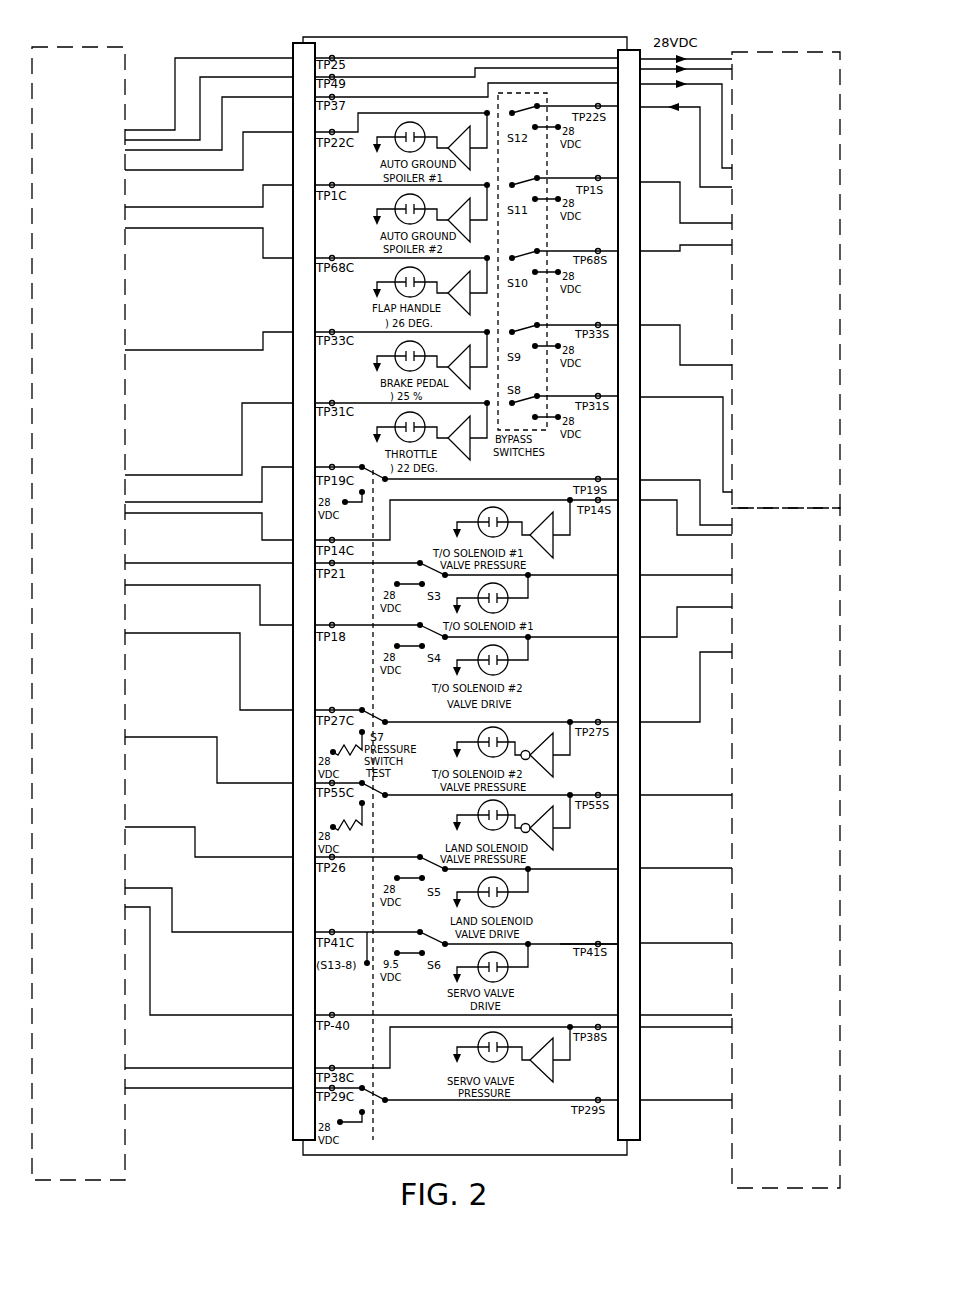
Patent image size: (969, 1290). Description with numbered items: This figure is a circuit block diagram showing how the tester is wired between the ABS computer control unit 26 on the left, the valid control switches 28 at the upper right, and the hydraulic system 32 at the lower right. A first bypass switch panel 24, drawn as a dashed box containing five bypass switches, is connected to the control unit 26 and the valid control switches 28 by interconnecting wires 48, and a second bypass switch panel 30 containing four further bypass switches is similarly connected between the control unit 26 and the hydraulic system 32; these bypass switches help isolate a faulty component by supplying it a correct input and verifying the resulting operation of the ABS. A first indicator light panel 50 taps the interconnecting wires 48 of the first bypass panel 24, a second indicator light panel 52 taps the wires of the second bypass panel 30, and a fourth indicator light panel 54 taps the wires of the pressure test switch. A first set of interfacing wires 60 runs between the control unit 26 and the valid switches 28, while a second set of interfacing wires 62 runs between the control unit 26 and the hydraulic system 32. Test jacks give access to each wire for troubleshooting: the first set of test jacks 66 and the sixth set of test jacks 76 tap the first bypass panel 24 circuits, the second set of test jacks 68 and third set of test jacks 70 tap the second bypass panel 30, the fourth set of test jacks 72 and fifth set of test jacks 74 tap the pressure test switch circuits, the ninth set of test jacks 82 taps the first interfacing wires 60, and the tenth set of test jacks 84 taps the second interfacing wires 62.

The first bypass switch panel 24 is at (548, 308).
The computer control unit 26 is at (88, 222).
The valid control switches 28 is at (795, 142).
The second bypass switch panel 30 is at (372, 633).
The hydraulic system 32 is at (798, 638).
The interconnecting wires 48 is at (358, 331).
The first indicator light panel 50 is at (396, 145).
The second indicator light panel 52 is at (507, 668).
The fourth indicator light panel 54 is at (512, 1042).
The first set of interfacing wires 60 is at (433, 57).
The second set of interfacing wires 62 is at (528, 500).
The first set of test jacks 66 is at (600, 176).
The second set of test jacks 68 is at (600, 941).
The third set of test jacks 70 is at (348, 600).
The fourth set of test jacks 72 is at (349, 445).
The fifth set of test jacks 74 is at (602, 478).
The sixth set of test jacks 76 is at (347, 235).
The ninth set of test jacks 82 is at (334, 55).
The tenth set of test jacks 84 is at (335, 539).